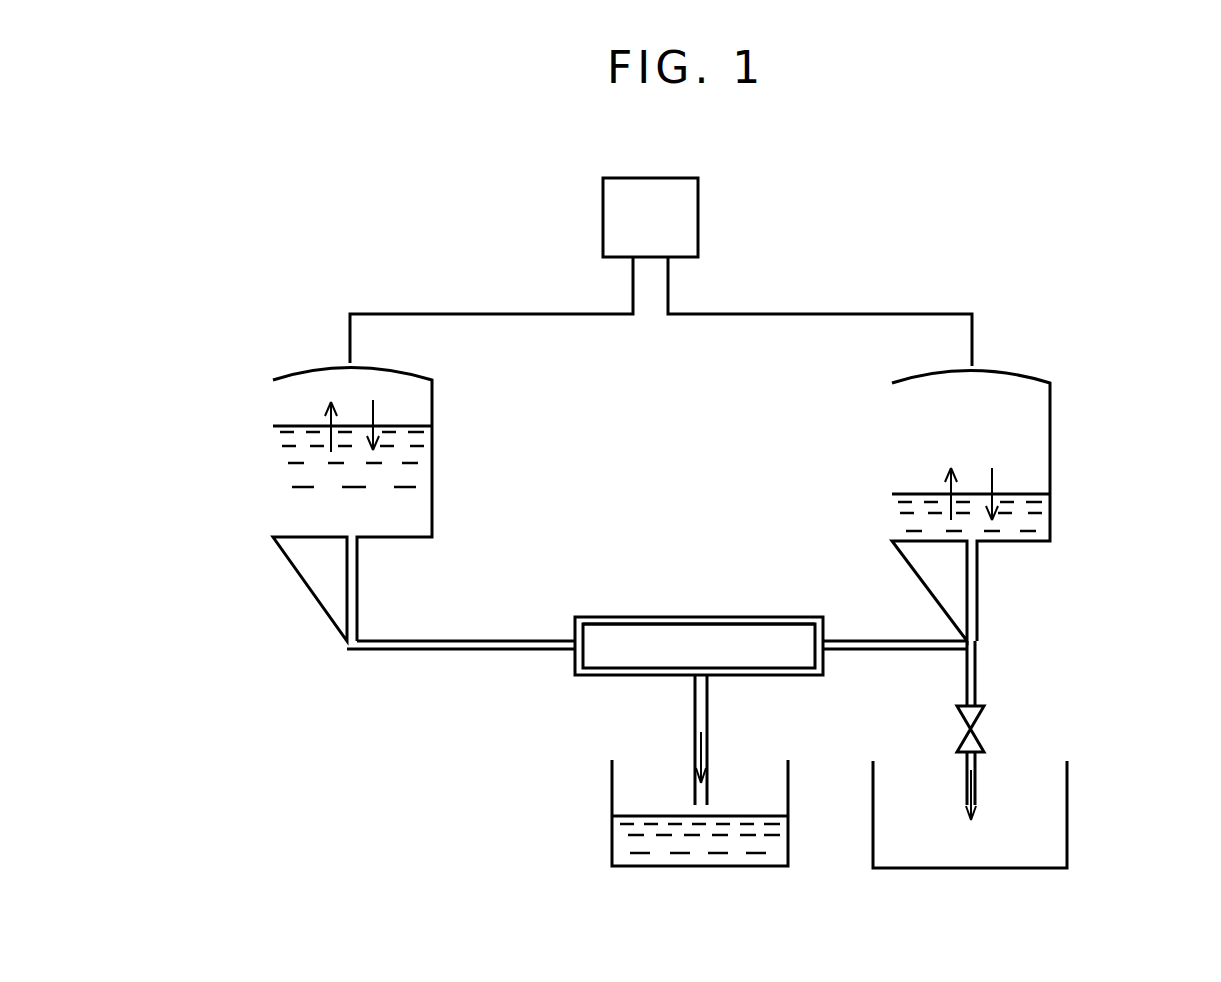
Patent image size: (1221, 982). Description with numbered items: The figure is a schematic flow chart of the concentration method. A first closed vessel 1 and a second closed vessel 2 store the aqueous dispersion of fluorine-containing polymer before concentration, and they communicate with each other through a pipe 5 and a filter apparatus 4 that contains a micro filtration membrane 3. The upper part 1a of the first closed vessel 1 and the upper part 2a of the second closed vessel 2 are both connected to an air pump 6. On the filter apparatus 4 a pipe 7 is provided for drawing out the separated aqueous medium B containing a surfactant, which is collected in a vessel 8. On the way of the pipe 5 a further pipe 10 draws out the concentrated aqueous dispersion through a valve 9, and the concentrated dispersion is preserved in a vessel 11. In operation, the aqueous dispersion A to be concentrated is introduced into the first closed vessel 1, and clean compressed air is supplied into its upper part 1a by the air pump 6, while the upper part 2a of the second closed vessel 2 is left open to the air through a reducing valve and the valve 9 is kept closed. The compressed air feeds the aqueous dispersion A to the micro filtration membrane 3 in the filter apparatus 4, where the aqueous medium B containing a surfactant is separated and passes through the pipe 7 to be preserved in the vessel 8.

The first closed vessel 1 is at (330, 363).
The upper part of the first closed vessel 1a is at (289, 403).
The second closed vessel 2 is at (1050, 428).
The upper part of the second closed vessel 2a is at (980, 435).
The micro filtration membrane 3 is at (790, 642).
The filter apparatus 4 is at (662, 624).
The pipe 5 is at (452, 645).
The air pump 6 is at (684, 219).
The pipe 7 is at (702, 712).
The vessel 8 is at (612, 765).
The valve 9 is at (983, 716).
The pipe 10 is at (970, 672).
The vessel 11 is at (1067, 810).
The aqueous dispersion A is at (307, 520).
The separated aqueous medium B is at (660, 855).